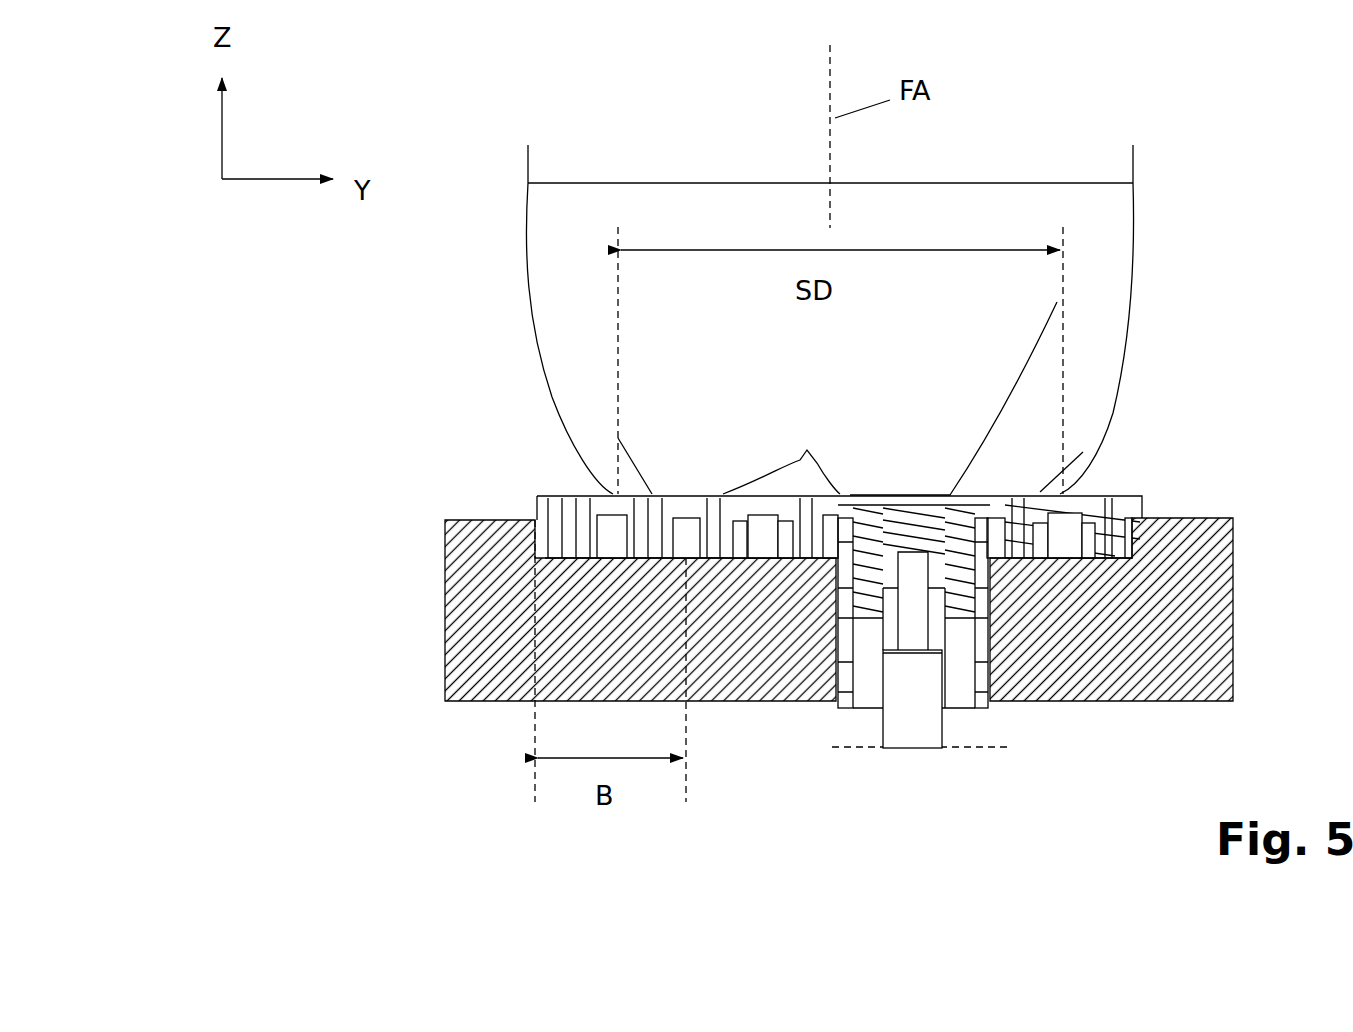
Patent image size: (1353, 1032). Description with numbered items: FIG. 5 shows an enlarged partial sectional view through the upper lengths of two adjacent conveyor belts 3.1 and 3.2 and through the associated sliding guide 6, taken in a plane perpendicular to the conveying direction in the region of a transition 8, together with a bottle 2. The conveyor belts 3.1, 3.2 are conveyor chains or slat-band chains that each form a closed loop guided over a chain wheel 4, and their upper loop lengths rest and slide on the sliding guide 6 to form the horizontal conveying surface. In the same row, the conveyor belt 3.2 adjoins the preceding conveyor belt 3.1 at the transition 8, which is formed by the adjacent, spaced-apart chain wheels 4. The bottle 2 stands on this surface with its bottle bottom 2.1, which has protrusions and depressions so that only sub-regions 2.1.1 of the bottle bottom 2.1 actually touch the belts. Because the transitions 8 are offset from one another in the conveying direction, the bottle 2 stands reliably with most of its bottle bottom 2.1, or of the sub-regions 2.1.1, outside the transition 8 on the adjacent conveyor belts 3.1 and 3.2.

The bottle 2 is at (839, 320).
The bottle bottom 2.1 is at (839, 398).
The sub-region of the bottle bottom 2.1.1 is at (618, 438).
The conveyor belt 3.1 is at (540, 494).
The conveyor belt 3.2 is at (1108, 533).
The chain wheel 4 is at (908, 710).
The sliding guide 6 is at (475, 627).
The transition 8 is at (1008, 683).